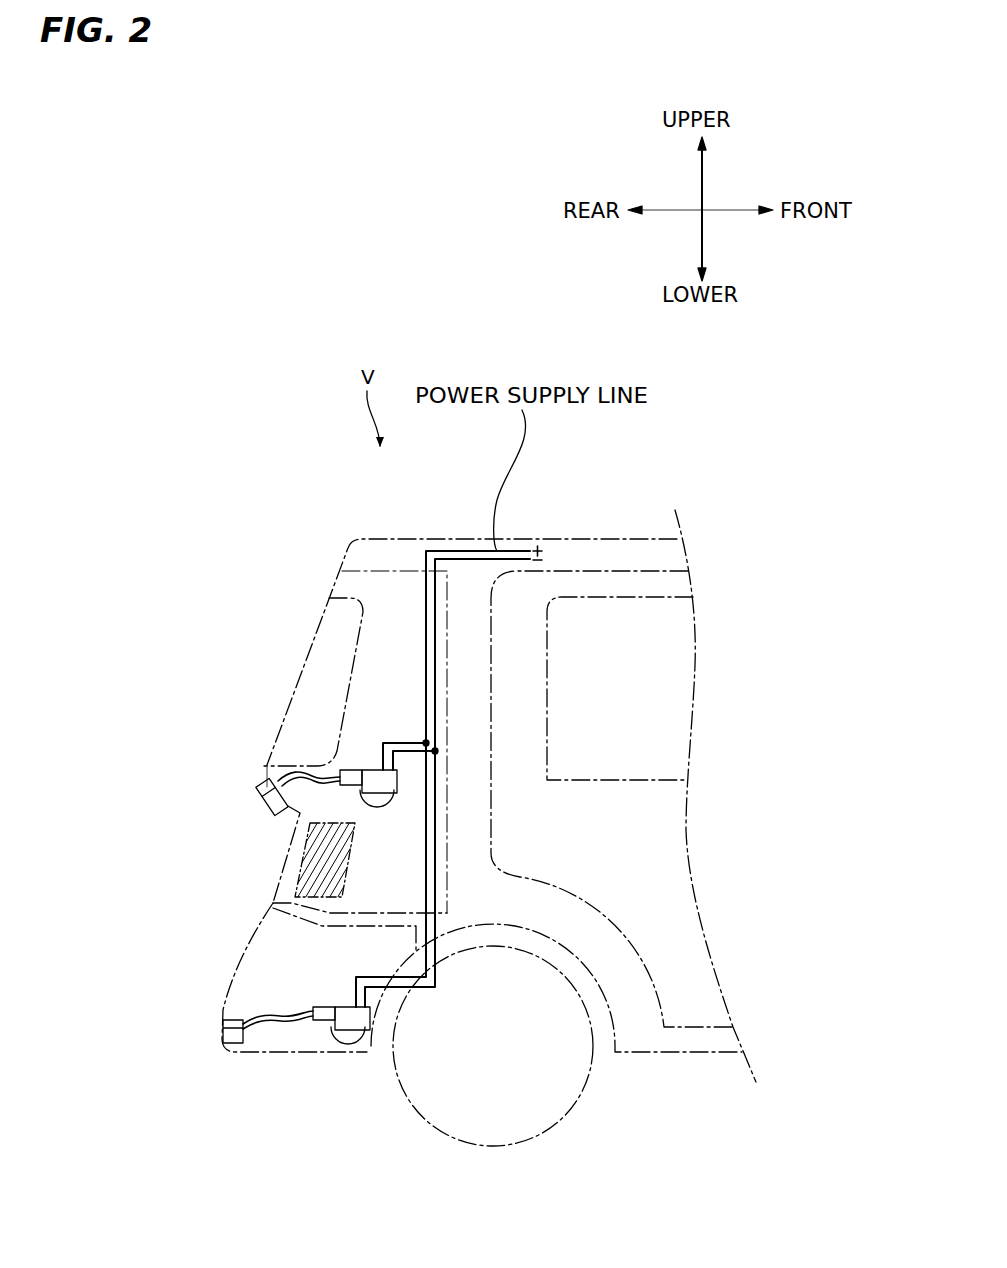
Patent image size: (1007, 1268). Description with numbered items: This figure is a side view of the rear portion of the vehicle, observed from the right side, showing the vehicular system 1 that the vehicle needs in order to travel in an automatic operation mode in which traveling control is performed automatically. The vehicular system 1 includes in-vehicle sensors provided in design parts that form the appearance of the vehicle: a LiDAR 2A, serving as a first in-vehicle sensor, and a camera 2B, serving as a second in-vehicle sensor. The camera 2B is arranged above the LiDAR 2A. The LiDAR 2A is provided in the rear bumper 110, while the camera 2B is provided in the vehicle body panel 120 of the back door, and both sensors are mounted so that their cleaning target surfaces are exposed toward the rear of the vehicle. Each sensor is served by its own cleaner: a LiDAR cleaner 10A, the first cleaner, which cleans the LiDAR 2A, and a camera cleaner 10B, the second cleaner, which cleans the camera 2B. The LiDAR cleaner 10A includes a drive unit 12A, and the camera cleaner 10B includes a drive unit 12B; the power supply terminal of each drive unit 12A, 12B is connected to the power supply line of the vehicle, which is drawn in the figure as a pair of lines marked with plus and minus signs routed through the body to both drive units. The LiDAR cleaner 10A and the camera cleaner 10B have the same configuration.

The vehicular system 1 is at (222, 698).
The vehicle body panel 120 is at (262, 768).
The rear bumper 110 is at (237, 962).
The LiDAR cleaner 10A is at (227, 1023).
The camera cleaner 10B is at (258, 790).
The LiDAR 2A is at (233, 1038).
The camera 2B is at (272, 806).
The drive unit 12A is at (345, 1033).
The drive unit 12B is at (378, 800).